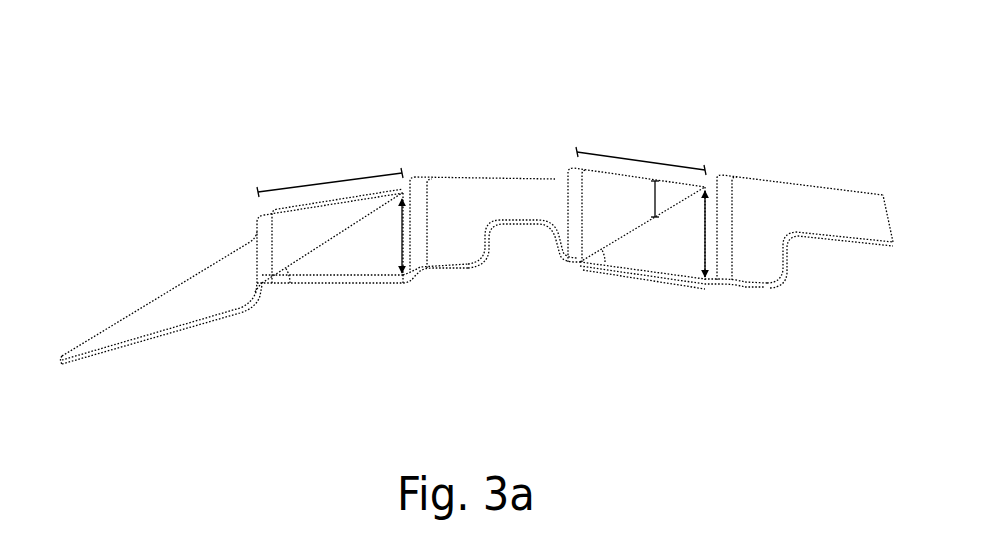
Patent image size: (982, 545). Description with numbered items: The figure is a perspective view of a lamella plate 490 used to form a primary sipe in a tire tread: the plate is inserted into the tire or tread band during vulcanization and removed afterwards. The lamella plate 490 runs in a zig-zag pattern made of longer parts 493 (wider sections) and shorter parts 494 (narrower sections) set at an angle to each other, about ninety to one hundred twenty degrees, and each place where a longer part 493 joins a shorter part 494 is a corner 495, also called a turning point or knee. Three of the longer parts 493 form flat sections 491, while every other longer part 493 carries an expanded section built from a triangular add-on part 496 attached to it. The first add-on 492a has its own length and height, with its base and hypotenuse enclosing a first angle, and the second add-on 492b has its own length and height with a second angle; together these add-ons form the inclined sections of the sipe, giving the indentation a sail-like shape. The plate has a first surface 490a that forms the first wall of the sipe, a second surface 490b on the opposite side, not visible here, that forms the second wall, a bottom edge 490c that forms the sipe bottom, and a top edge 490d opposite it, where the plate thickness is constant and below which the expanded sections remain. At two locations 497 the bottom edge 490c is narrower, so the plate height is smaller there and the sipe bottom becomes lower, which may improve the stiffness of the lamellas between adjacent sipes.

The lamella plate 490 is at (458, 234).
The first surface 490a is at (135, 305).
The second surface 490b is at (95, 367).
The bottom edge 490c is at (140, 347).
The top edge 490d is at (168, 275).
The flat section 491 is at (218, 305).
The first add-on 492a is at (640, 258).
The second add-on 492b is at (347, 262).
The longer part 493 is at (192, 333).
The shorter part 494 is at (245, 250).
The corner 495 is at (250, 300).
The add-on part 496 is at (687, 292).
The location of reduced height 497 is at (518, 237).